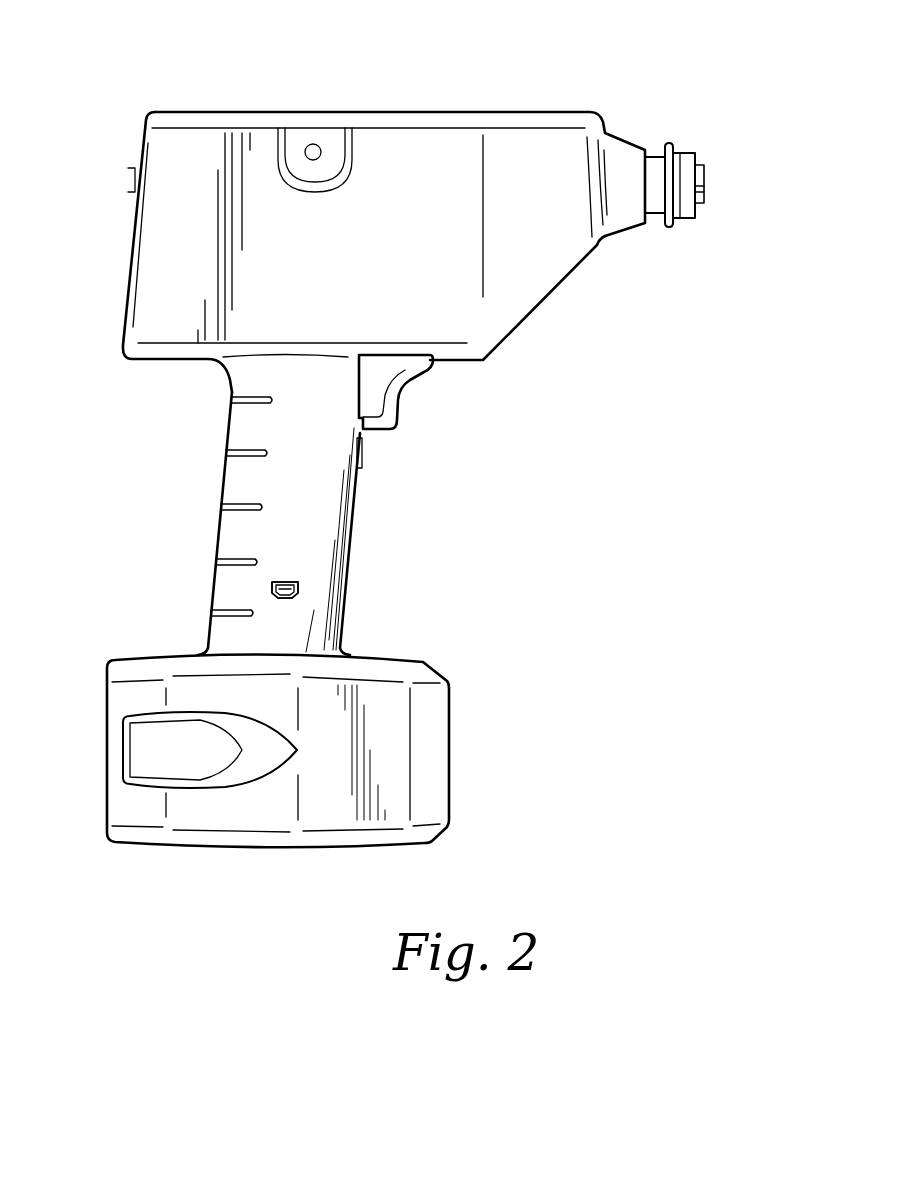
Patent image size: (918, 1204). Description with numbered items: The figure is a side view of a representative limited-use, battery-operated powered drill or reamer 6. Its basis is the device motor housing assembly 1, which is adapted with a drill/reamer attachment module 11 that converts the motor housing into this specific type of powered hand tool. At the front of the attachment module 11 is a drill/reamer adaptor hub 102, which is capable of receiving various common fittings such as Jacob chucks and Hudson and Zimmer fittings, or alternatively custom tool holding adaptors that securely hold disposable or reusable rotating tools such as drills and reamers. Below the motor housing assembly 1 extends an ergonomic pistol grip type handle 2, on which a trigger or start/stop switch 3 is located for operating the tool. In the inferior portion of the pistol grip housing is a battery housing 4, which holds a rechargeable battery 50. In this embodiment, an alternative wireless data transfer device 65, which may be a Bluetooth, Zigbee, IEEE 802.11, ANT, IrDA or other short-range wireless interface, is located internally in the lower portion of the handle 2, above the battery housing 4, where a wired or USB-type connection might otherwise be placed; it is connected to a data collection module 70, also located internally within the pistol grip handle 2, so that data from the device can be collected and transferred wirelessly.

The motor housing assembly 1 is at (177, 108).
The drill/reamer attachment module 11 is at (520, 143).
The drill/reamer adaptor hub 102 is at (719, 165).
The powered drill or reamer 6 is at (757, 122).
The ergonomic pistol grip type handle 2 is at (210, 467).
The trigger or start/stop switch 3 is at (405, 389).
The wireless data transfer device 65 is at (310, 588).
The data collection module 70 is at (285, 590).
The battery housing 4 is at (453, 748).
The rechargeable battery 50 is at (100, 738).